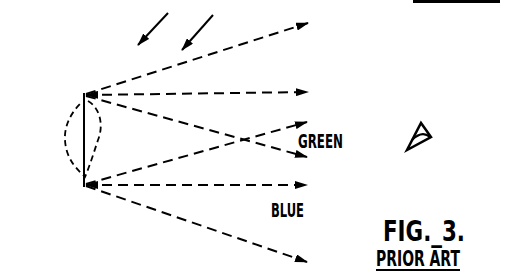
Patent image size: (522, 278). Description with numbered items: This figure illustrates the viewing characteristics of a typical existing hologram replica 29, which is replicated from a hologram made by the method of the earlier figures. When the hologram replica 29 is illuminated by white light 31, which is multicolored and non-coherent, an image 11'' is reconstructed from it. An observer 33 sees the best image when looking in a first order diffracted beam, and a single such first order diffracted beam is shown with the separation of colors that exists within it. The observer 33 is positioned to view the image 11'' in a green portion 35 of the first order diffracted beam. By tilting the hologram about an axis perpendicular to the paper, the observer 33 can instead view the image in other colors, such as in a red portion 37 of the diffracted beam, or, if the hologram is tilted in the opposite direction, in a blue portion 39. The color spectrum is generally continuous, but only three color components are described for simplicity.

The hologram replica 29 is at (84, 96).
The image 11'' is at (66, 139).
The white light 31 is at (163, 30).
The observer 33 is at (424, 131).
The green portion 35 is at (282, 100).
The red portion 37 is at (241, 50).
The blue portion 39 is at (236, 230).